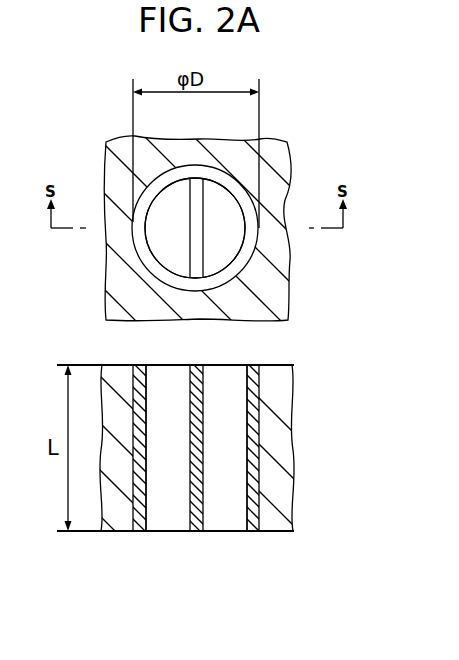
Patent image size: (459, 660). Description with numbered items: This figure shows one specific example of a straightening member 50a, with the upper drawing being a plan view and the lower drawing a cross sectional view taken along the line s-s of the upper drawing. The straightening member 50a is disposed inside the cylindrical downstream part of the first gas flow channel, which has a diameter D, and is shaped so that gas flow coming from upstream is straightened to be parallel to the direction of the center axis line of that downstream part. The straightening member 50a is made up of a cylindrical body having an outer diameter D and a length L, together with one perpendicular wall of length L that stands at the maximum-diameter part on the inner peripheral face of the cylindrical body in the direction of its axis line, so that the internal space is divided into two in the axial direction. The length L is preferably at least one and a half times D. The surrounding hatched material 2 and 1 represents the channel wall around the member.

The straightening member 50a is at (299, 100).
The body 2 is at (277, 171).
The base member 1 is at (281, 506).